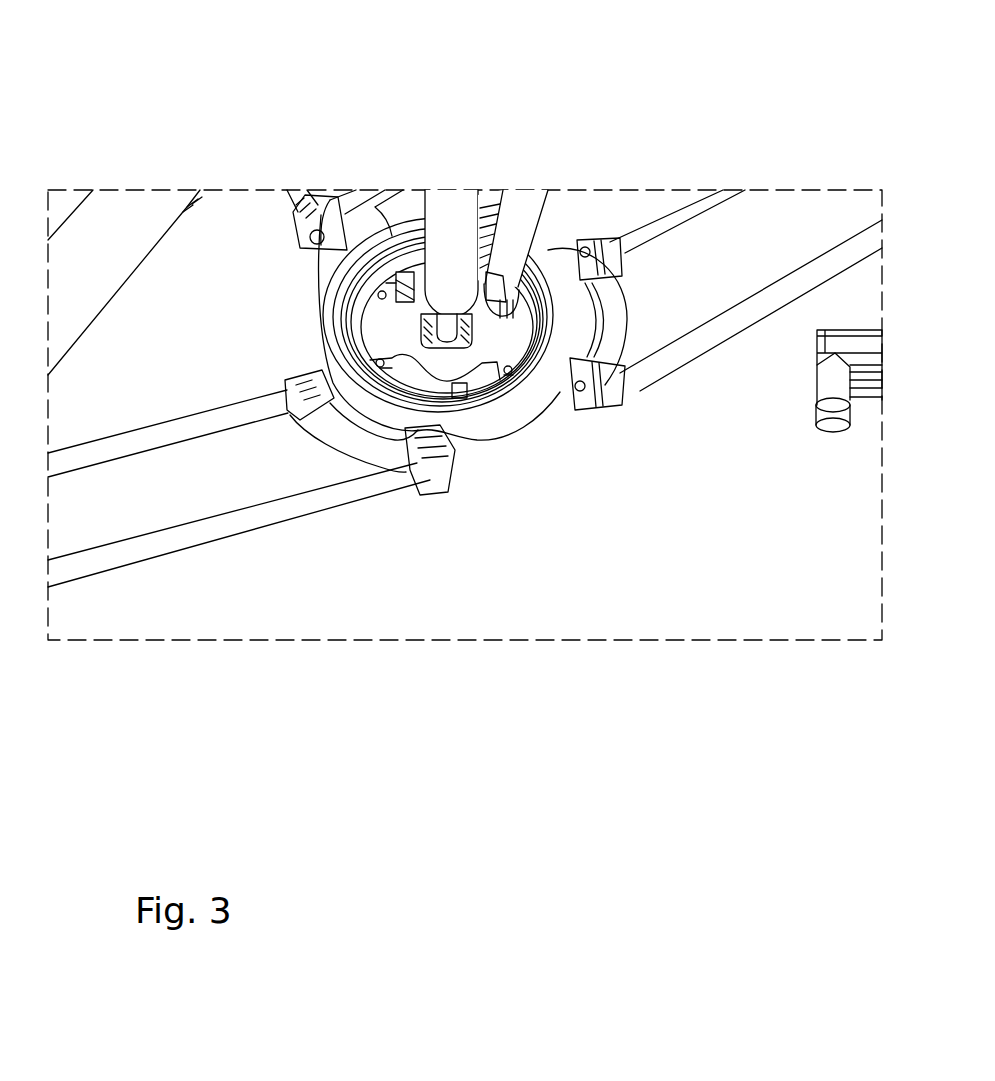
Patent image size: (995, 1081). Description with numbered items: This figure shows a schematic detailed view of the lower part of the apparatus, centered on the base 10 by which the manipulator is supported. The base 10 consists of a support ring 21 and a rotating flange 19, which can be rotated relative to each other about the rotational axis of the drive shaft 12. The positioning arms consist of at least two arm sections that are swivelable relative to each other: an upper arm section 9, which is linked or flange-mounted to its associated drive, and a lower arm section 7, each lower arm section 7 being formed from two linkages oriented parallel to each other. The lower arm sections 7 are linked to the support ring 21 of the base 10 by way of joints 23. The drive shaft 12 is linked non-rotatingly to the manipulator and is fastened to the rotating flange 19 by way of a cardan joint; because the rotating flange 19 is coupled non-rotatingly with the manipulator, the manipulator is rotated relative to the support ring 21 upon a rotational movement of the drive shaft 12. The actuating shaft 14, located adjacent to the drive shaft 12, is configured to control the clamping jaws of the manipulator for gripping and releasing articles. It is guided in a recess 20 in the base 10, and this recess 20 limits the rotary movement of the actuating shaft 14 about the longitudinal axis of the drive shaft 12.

The lower arm section 7 is at (305, 200).
The upper arm section 9 is at (185, 208).
The base 10 is at (589, 560).
The drive shaft 12 is at (462, 225).
The actuating shaft 14 is at (532, 215).
The rotating flange 19 is at (480, 383).
The recess 20 is at (410, 272).
The support ring 21 is at (540, 397).
The joint 23 is at (440, 427).